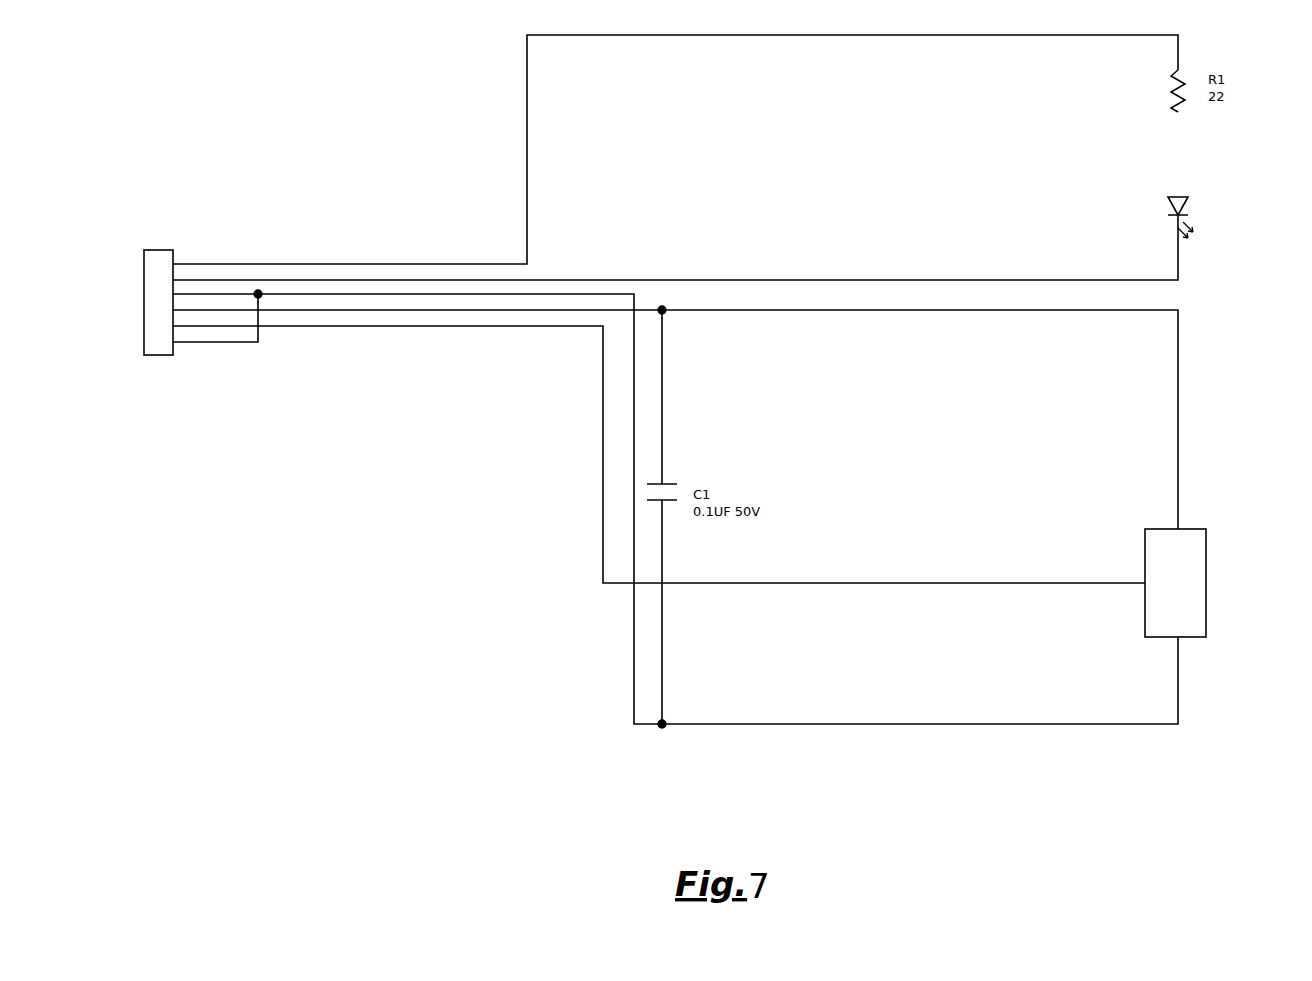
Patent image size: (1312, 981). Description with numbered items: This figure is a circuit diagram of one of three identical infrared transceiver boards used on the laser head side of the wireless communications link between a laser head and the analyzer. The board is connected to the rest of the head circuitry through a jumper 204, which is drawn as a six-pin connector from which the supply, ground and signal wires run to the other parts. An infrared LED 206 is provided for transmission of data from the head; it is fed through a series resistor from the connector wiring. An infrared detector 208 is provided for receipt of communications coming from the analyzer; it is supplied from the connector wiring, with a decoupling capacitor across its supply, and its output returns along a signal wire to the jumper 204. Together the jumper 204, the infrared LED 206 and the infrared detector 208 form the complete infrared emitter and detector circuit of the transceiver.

The jumper 204 is at (165, 249).
The infrared LED 206 is at (1186, 197).
The infrared detector 208 is at (1200, 529).